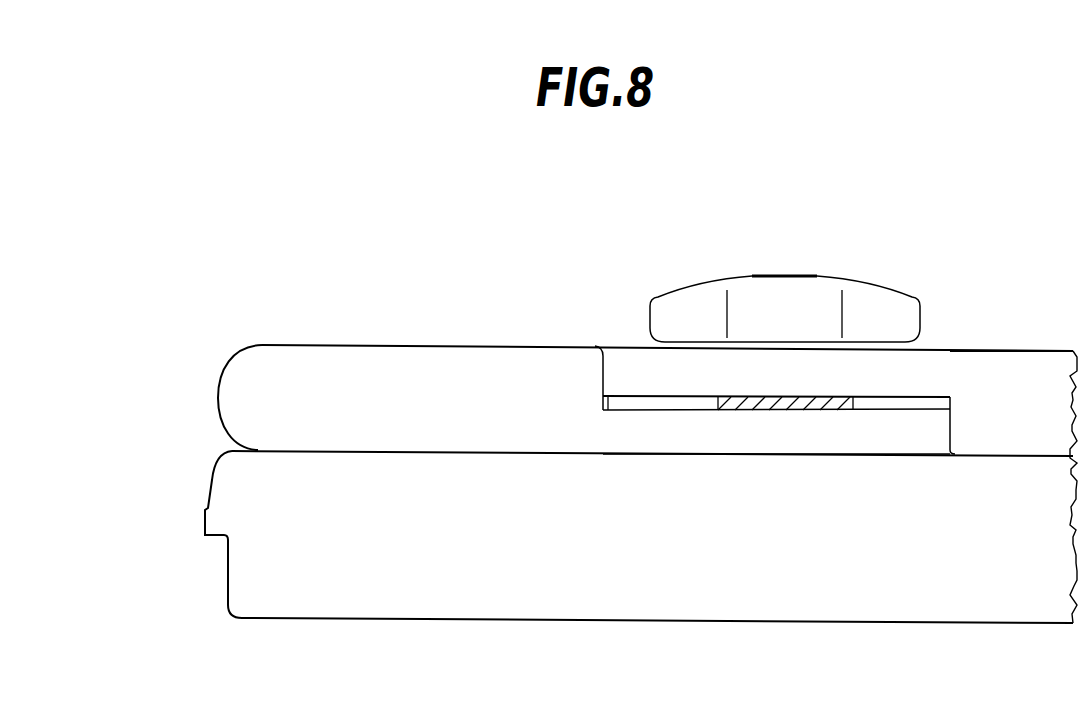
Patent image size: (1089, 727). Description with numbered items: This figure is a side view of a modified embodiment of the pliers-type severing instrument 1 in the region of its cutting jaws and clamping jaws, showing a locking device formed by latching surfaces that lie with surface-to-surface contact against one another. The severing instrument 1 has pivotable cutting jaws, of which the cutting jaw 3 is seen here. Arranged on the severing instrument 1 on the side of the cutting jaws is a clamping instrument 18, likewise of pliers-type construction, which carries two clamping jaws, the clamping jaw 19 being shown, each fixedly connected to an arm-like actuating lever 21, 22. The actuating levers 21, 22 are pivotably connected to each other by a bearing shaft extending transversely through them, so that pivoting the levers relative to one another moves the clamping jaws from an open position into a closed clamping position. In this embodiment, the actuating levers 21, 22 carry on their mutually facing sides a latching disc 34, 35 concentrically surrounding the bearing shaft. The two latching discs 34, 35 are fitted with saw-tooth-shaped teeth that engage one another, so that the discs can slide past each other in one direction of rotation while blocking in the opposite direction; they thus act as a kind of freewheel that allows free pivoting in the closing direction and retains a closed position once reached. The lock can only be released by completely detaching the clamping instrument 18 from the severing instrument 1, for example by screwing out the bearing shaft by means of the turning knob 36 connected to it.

The severing instrument 1 is at (922, 218).
The cutting jaw 3 is at (443, 590).
The clamping instrument 18 is at (473, 343).
The clamping jaw 19 is at (282, 375).
The actuating lever 21 is at (992, 366).
The actuating lever 22 is at (885, 437).
The latching disc 34 is at (727, 393).
The latching disc 35 is at (785, 413).
The turning knob 36 is at (781, 293).